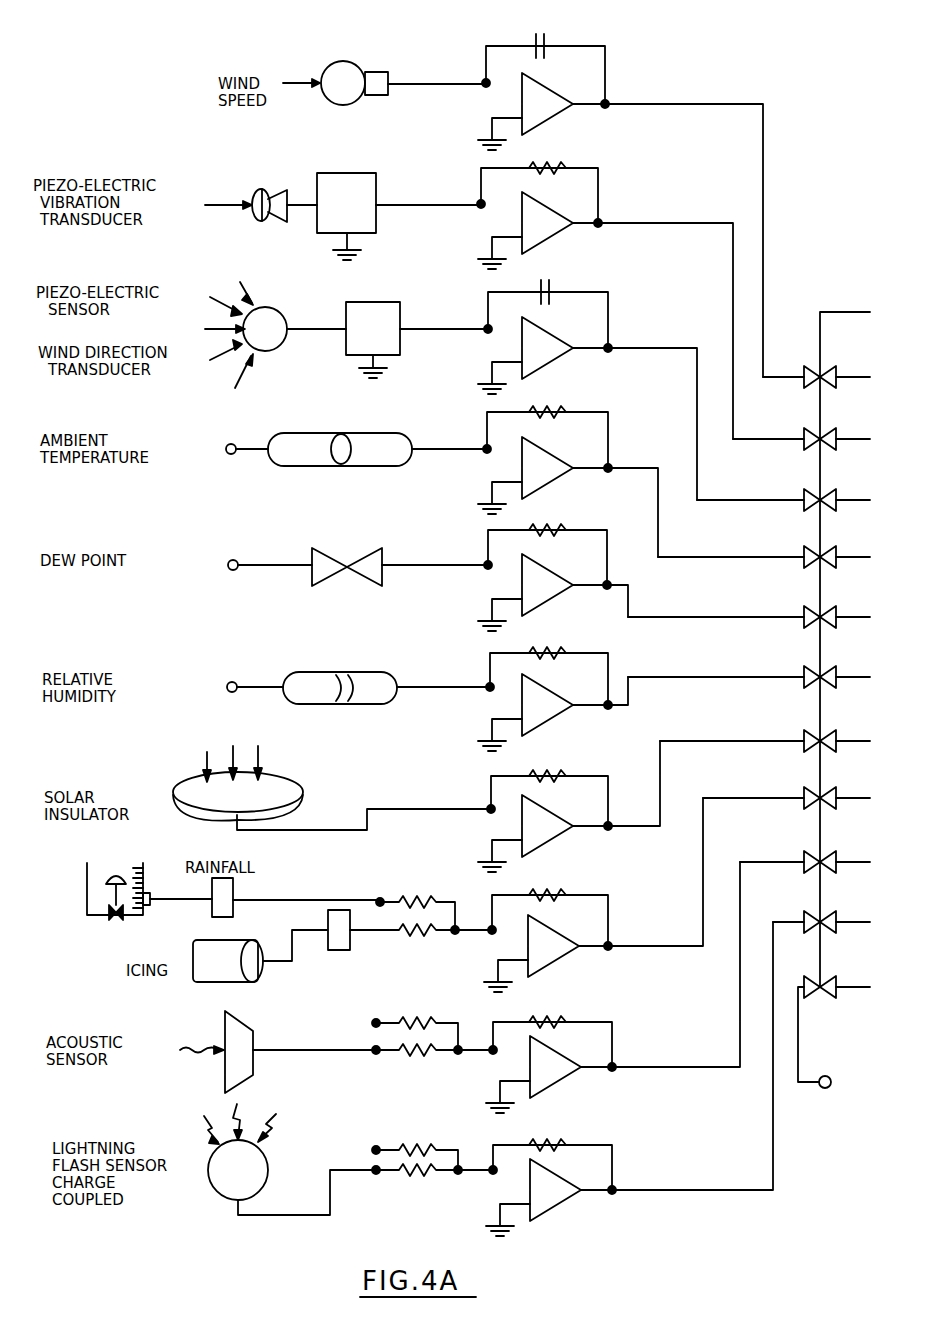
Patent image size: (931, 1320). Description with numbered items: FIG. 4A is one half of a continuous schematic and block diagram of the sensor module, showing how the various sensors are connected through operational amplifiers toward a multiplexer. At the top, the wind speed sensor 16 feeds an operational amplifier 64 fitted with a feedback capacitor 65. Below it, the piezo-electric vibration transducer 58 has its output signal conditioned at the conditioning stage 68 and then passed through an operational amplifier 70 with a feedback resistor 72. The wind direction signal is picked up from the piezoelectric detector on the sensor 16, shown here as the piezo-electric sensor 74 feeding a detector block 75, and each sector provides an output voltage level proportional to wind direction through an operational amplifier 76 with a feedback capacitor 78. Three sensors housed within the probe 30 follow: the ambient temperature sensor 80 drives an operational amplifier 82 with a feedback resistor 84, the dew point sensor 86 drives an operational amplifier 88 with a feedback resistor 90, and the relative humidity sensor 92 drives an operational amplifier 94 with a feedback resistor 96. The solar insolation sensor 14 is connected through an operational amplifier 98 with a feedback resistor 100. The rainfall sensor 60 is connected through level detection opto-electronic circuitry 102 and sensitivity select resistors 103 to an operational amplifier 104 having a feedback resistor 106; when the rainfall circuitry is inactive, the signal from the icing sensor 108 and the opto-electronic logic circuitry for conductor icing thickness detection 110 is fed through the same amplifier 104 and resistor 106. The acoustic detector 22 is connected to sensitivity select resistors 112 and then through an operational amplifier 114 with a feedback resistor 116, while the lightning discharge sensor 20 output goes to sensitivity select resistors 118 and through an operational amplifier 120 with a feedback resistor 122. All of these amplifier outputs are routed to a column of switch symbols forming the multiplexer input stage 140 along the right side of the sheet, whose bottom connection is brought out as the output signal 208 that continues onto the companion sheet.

The solar insolation sensor 14 is at (278, 785).
The wind speed sensor 16 is at (340, 70).
The lightning discharge sensor 20 is at (265, 1160).
The acoustic detector 22 is at (258, 1034).
The probe 30 is at (230, 443).
The piezo-electric vibration transducer 58 is at (265, 188).
The rainfall sensor 60 is at (103, 905).
The operational amplifier 64 is at (548, 86).
The feedback capacitor 65 is at (538, 33).
The signal conditioner 68 is at (362, 173).
The operational amplifier 70 is at (548, 205).
The feedback resistor 72 is at (557, 165).
The piezo-electric wind direction sensor 74 is at (272, 320).
The signal conditioner 75 is at (383, 302).
The operational amplifier 76 is at (553, 328).
The feedback capacitor 78 is at (552, 283).
The ambient temperature sensor 80 is at (348, 433).
The operational amplifier 82 is at (556, 452).
The feedback resistor 84 is at (556, 406).
The dew point sensor 86 is at (344, 548).
The operational amplifier 88 is at (556, 570).
The feedback resistor 90 is at (556, 524).
The relative humidity sensor 92 is at (350, 672).
The operational amplifier 94 is at (556, 692).
The feedback resistor 96 is at (556, 648).
The operational amplifier 98 is at (556, 815).
The feedback resistor 100 is at (570, 775).
The level detection opto-electronic circuitry 102 is at (235, 883).
The sensitivity select resistors 103 is at (412, 895).
The operational amplifier 104 is at (553, 935).
The feedback resistor 106 is at (560, 892).
The icing sensor 108 is at (215, 948).
The opto-electronic logic circuitry for conductor icing thickness detection 110 is at (343, 940).
The sensitivity select resistors 112 is at (405, 1015).
The operational amplifier 114 is at (553, 1055).
The feedback resistor 116 is at (560, 1017).
The sensitivity select resistors 118 is at (410, 1140).
The operational amplifier 120 is at (553, 1180).
The feedback resistor 122 is at (555, 1140).
The multiplexer switch bank 140 is at (800, 352).
The output signal 208 is at (828, 1078).